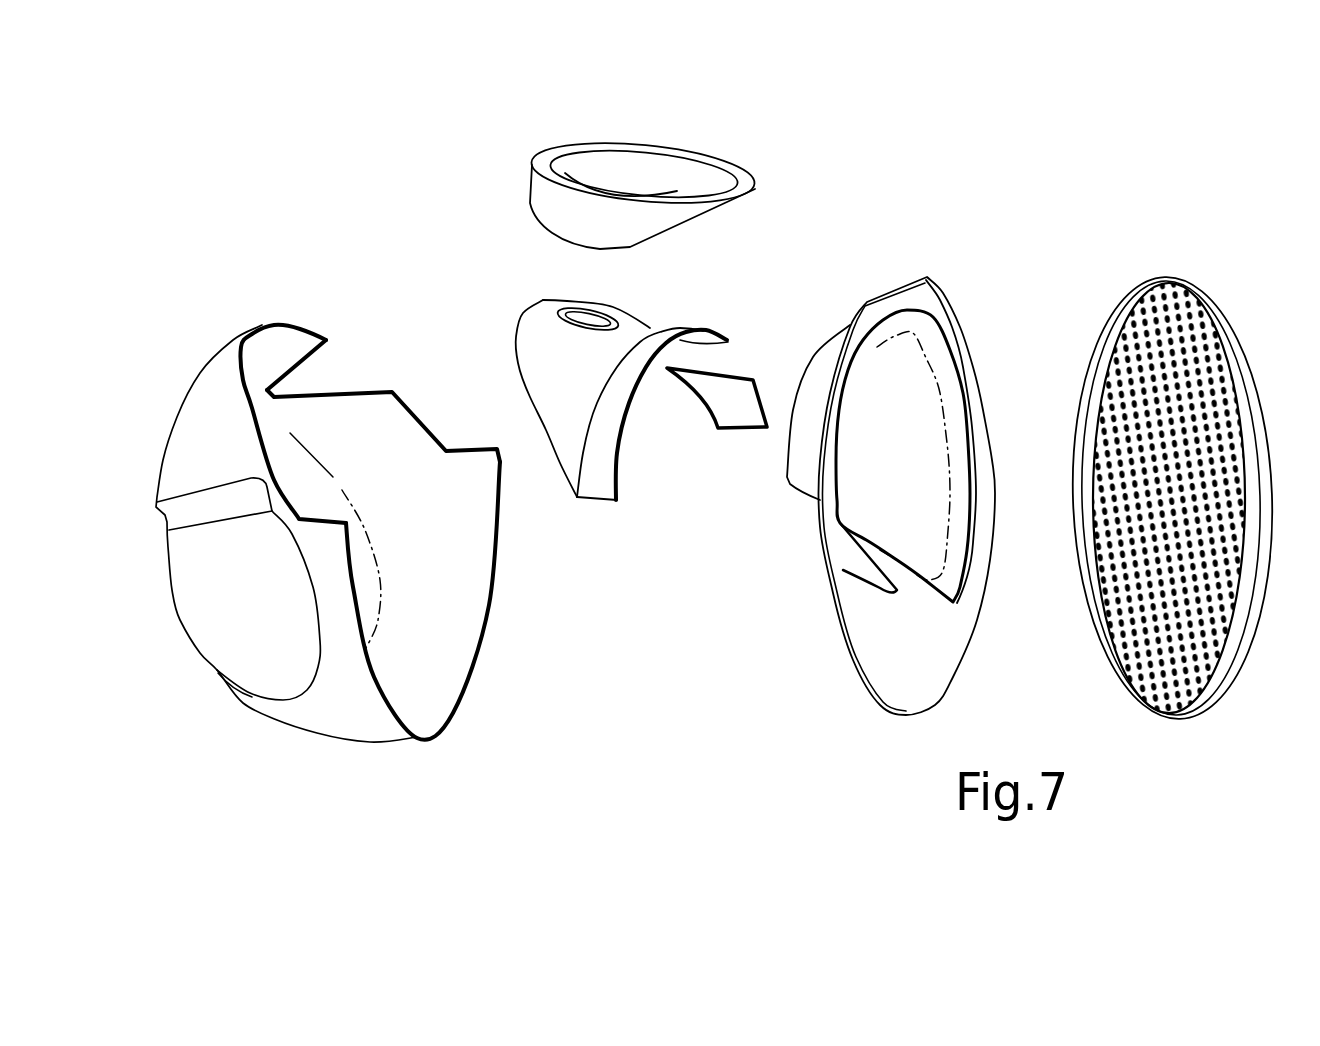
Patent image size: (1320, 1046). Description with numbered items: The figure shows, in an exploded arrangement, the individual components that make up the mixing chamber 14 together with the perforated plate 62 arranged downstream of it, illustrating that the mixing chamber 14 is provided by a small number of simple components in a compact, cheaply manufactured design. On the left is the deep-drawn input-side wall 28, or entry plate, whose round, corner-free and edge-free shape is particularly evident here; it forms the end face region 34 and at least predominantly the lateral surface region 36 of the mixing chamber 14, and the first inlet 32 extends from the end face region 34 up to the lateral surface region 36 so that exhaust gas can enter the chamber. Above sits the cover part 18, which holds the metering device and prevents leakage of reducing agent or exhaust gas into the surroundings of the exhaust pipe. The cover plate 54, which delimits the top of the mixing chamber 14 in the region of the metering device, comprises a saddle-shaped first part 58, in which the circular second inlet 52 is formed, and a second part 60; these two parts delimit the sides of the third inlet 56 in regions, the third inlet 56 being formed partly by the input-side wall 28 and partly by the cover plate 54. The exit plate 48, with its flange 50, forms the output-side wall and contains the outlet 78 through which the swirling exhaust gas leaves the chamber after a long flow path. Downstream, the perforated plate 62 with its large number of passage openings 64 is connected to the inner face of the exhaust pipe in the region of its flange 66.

The mixing chamber 14 is at (253, 228).
The cover part 18 is at (640, 212).
The input-side wall 28 is at (308, 300).
The first inlet 32 is at (213, 508).
The end face region 34 is at (180, 597).
The lateral surface region 36 is at (360, 707).
The exit plate 48 is at (943, 277).
The flange 50 is at (860, 652).
The second inlet 52 is at (604, 316).
The cover plate 54 is at (517, 297).
The third inlet 56 is at (323, 368).
The first part 58 is at (565, 447).
The second part 60 is at (728, 413).
The perforated plate 62 is at (1182, 263).
The passage openings 64 is at (1212, 402).
The flange 66 is at (1228, 656).
The outlet 78 is at (853, 557).